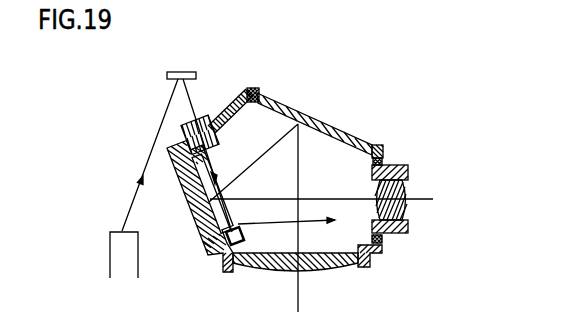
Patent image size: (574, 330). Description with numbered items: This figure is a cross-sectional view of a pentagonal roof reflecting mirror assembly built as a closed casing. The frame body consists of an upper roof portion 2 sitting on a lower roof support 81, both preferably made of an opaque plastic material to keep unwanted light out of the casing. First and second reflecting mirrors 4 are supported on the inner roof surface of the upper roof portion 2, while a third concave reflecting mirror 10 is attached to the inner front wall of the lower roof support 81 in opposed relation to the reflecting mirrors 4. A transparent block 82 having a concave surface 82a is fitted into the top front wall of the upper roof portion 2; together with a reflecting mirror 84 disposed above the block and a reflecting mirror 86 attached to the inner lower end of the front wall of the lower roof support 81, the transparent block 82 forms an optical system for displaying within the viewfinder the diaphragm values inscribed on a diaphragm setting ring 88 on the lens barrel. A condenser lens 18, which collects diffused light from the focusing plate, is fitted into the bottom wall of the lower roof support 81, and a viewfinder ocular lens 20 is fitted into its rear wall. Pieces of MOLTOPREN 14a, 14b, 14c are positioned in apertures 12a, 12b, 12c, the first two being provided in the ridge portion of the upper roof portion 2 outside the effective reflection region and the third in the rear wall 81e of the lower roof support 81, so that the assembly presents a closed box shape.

The upper roof portion 2 is at (335, 122).
The first and second reflecting mirrors 4 is at (320, 132).
The third concave reflecting mirror 10 is at (213, 170).
The aperture 12a is at (251, 88).
The aperture 12b is at (380, 146).
The aperture 12c is at (381, 256).
The piece of MOLTOPREN 14a is at (260, 88).
The piece of MOLTOPREN 14b is at (382, 162).
The piece of MOLTOPREN 14c is at (372, 238).
The condenser lens 18 is at (273, 268).
The viewfinder ocular lens 20 is at (405, 208).
The lower roof support 81 is at (203, 243).
The rear wall 81e is at (392, 234).
The transparent block 82 is at (183, 132).
The concave surface 82a is at (193, 120).
The reflecting mirror 84 is at (183, 71).
The reflecting mirror 86 is at (229, 236).
The diaphragm setting ring 88 is at (112, 232).